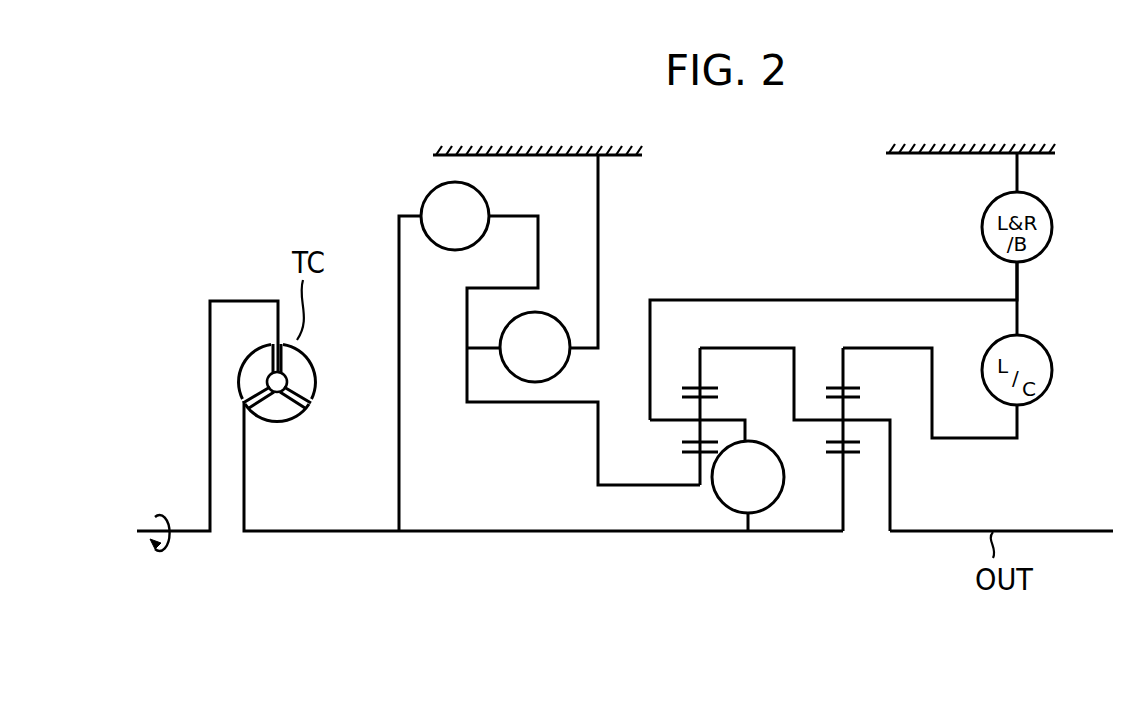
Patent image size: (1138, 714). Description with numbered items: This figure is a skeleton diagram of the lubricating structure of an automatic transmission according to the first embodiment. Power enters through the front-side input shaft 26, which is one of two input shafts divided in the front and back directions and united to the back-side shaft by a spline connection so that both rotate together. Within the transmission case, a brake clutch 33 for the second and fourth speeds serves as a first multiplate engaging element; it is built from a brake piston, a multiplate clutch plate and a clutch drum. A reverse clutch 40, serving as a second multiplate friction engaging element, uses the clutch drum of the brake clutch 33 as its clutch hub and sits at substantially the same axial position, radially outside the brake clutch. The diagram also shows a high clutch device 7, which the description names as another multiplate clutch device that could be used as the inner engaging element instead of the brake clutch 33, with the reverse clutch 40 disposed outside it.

The reverse clutch 40 is at (425, 192).
The front-side input shaft 26 is at (345, 533).
The 2-4 brake clutch 33 is at (535, 382).
The high clutch device 7 is at (783, 487).